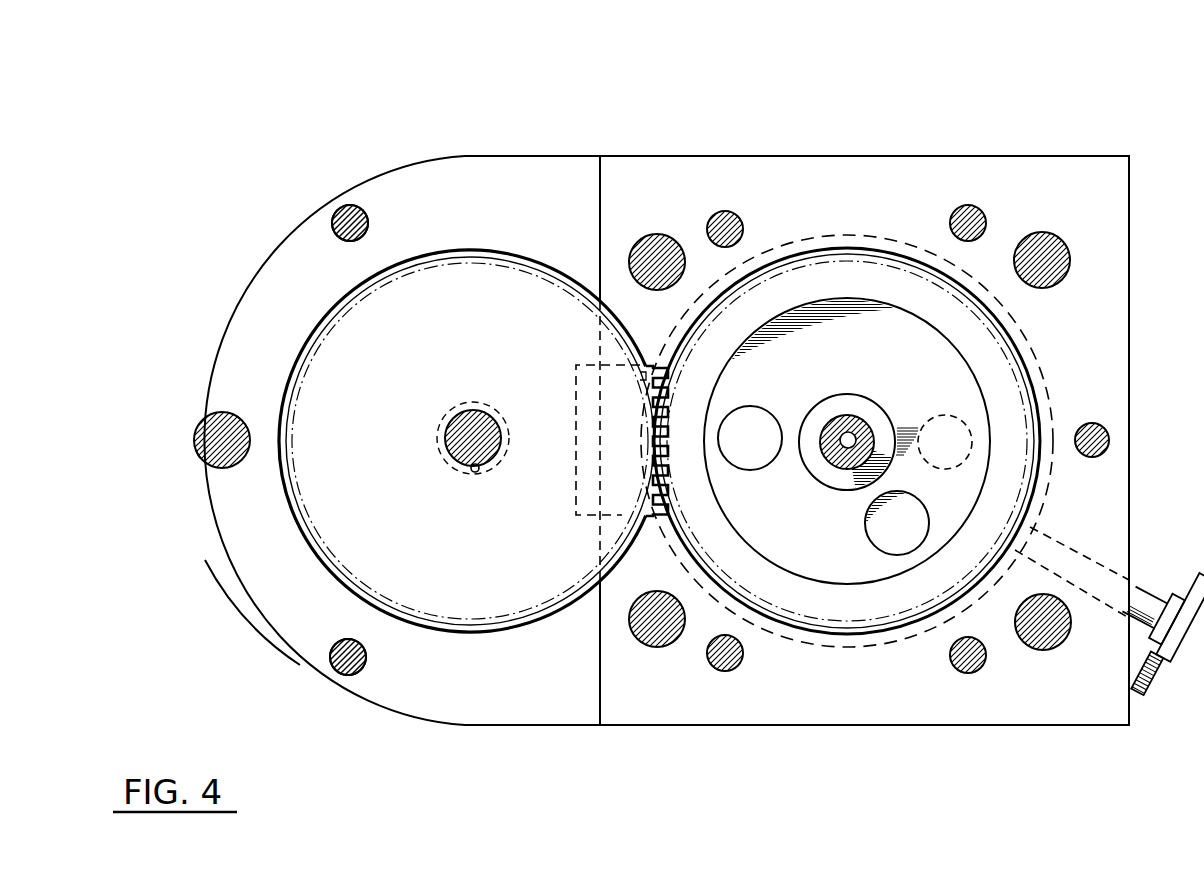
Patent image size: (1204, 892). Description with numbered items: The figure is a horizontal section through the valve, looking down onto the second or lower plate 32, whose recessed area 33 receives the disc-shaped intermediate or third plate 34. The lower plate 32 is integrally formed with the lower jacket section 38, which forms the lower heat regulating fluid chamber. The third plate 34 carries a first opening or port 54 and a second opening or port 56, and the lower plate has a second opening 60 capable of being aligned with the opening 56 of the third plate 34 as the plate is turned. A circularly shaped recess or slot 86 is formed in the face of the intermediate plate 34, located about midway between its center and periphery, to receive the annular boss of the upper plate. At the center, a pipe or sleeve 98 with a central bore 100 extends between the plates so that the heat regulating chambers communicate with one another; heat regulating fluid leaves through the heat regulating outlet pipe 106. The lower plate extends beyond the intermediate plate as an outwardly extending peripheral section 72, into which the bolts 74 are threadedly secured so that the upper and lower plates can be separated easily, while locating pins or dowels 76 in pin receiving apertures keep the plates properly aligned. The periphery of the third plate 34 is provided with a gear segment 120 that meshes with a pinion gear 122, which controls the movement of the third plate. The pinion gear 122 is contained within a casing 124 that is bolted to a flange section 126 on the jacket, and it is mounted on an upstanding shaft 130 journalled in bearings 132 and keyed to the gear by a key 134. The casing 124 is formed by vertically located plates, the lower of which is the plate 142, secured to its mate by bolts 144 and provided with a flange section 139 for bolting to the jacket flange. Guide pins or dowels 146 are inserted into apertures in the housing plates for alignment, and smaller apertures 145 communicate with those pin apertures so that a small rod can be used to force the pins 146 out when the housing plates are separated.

The second or lower plate 32 is at (804, 150).
The recessed area 33 is at (822, 246).
The intermediate or third plate 34 is at (872, 262).
The lower jacket section 38 is at (1036, 358).
The first opening or port 54 is at (760, 467).
The second opening or port 56 is at (878, 540).
The second opening 60 is at (945, 414).
The outwardly extending peripheral section 72 is at (1036, 170).
The bolts 74 is at (717, 216).
The locating pins or dowels 76 is at (650, 246).
The circularly shaped recess or slot 86 is at (940, 510).
The pipe or sleeve 98 is at (858, 420).
The central bore 100 is at (836, 470).
The heat regulating outlet pipe 106 is at (1148, 596).
The gear segment 120 is at (674, 487).
The pinion gear 122 is at (466, 441).
The casing 124 is at (245, 240).
The flange section 126 is at (643, 520).
The upstanding shaft 130 is at (462, 424).
The bearings 132 is at (502, 410).
The key 134 is at (478, 472).
The flange section 139 is at (576, 515).
The plate 142 is at (242, 578).
The bolts 144 is at (343, 213).
The smaller apertures 145 is at (192, 455).
The guide pins or dowels 146 is at (212, 428).